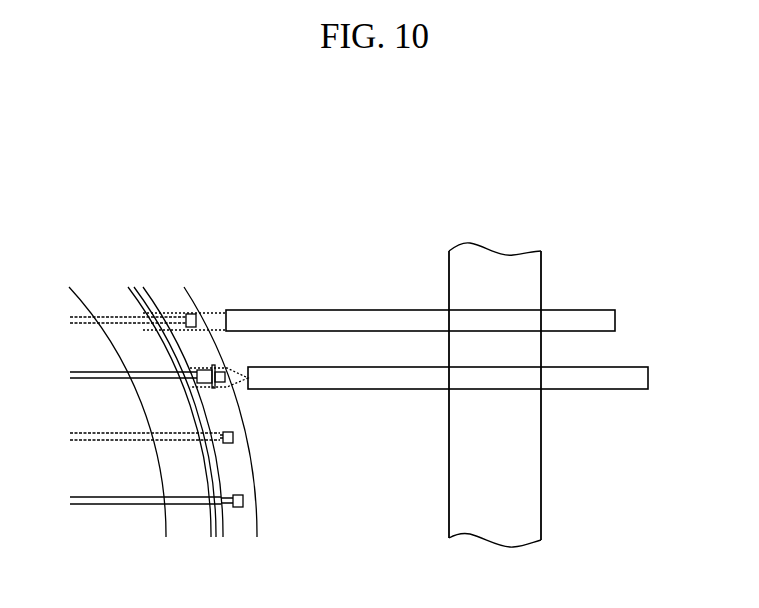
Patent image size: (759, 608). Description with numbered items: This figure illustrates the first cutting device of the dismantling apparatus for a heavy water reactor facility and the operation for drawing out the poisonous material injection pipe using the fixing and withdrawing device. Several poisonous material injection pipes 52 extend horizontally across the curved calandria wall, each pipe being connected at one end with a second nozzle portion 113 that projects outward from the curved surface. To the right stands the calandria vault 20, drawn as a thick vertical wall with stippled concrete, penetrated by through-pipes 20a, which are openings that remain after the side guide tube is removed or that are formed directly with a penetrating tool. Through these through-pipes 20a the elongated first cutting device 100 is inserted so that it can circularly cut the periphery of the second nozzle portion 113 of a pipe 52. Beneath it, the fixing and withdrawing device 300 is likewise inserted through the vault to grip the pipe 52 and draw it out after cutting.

The poisonous material injection pipe 52 is at (100, 372).
The second nozzle portion 113 is at (227, 443).
The calandria vault 20 is at (542, 271).
The through-pipe 20a is at (505, 368).
The first cutting device 100 is at (626, 314).
The fixing and withdrawing device 300 is at (659, 372).